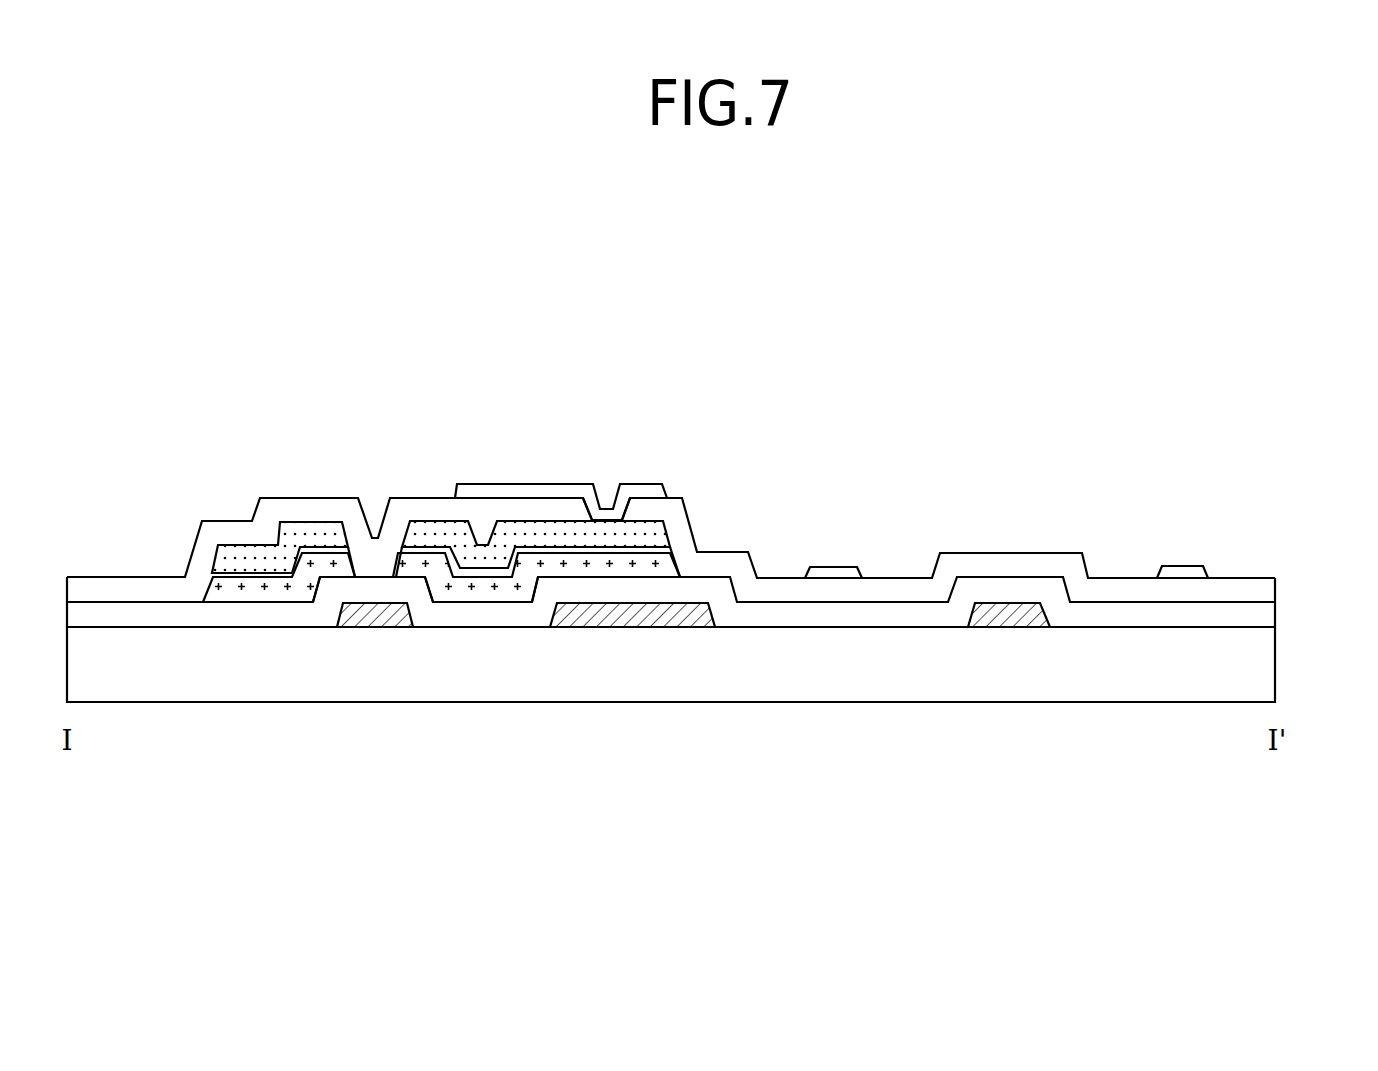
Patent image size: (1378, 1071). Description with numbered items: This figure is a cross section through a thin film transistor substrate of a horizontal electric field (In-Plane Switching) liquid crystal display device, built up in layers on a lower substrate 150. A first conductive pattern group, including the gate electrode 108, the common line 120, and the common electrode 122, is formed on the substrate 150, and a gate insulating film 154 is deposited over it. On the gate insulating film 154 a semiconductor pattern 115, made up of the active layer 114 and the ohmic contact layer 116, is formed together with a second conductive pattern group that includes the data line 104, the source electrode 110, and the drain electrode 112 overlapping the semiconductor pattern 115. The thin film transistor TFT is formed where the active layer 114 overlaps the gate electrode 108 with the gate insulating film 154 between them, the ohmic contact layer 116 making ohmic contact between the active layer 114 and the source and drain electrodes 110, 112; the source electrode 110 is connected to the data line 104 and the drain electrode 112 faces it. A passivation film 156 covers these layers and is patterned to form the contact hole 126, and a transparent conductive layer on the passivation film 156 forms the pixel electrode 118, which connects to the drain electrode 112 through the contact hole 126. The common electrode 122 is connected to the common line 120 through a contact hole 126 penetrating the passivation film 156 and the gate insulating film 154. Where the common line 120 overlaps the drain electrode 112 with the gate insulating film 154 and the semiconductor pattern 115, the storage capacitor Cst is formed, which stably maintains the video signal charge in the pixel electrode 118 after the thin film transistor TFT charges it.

The data line 104 is at (233, 557).
The gate electrode 108 is at (382, 615).
The source electrode 110 is at (325, 530).
The drain electrode 112 is at (437, 530).
The active layer 114 is at (457, 587).
The semiconductor pattern 115 is at (536, 650).
The ohmic contact layer 116 is at (494, 578).
The pixel electrode 118 is at (515, 493).
The common line 120 is at (632, 615).
The common electrode 122 is at (1005, 617).
The contact hole 126 is at (607, 494).
The lower substrate 150 is at (1275, 667).
The gate insulating film 154 is at (1275, 615).
The passivation film 156 is at (1275, 585).
The thin film transistor TFT is at (374, 480).
The storage capacitor Cst is at (666, 455).